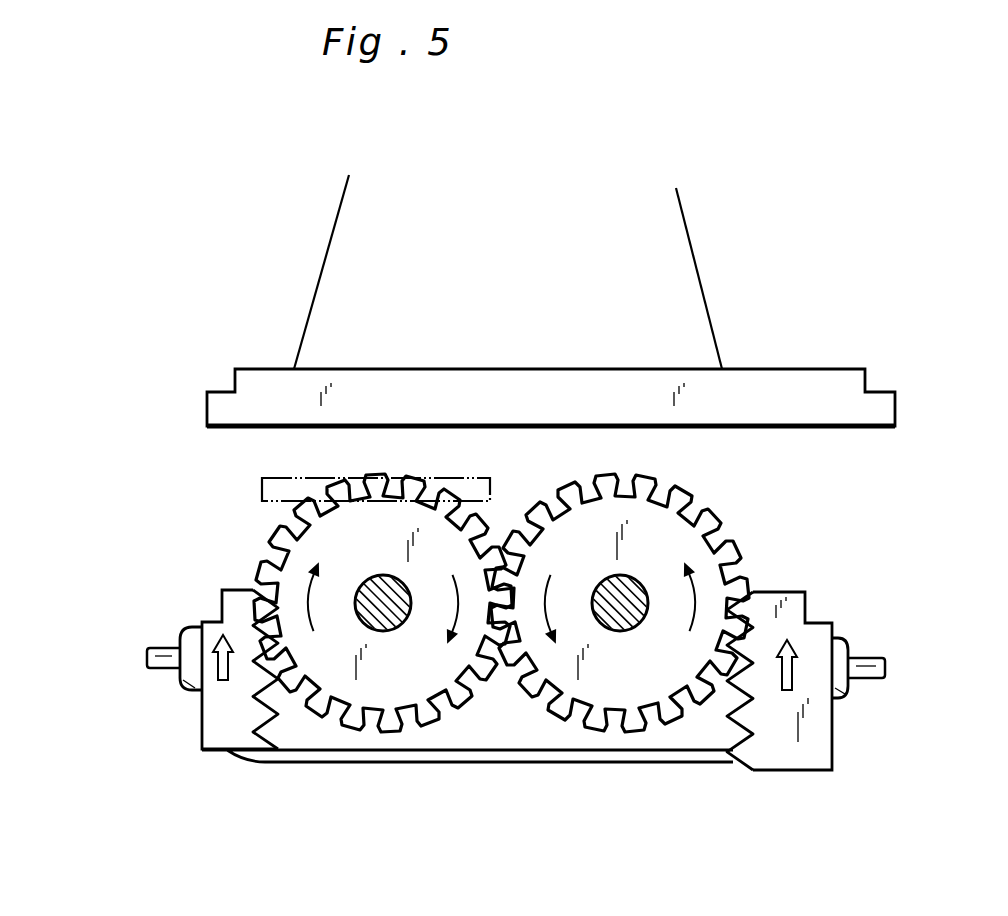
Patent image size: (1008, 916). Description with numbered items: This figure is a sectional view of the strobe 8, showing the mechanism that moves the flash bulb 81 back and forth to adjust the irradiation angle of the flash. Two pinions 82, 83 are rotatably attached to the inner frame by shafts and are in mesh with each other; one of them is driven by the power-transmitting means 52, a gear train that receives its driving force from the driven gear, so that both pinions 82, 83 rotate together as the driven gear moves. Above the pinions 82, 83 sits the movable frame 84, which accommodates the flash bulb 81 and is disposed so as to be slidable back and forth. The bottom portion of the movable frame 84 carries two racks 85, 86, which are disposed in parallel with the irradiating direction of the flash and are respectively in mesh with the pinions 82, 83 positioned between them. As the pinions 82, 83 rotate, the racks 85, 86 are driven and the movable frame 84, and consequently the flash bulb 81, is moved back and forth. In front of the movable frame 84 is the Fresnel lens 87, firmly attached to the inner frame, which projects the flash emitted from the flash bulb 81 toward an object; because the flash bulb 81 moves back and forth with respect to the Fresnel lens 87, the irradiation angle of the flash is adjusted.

The strobe 8 is at (138, 452).
The power-transmitting means 52 is at (262, 488).
The flash bulb 81 is at (185, 690).
The pinion 82 is at (375, 690).
The pinion 83 is at (640, 685).
The movable frame 84 is at (825, 745).
The rack 85 is at (228, 722).
The rack 86 is at (781, 740).
The Fresnel lens 87 is at (262, 387).